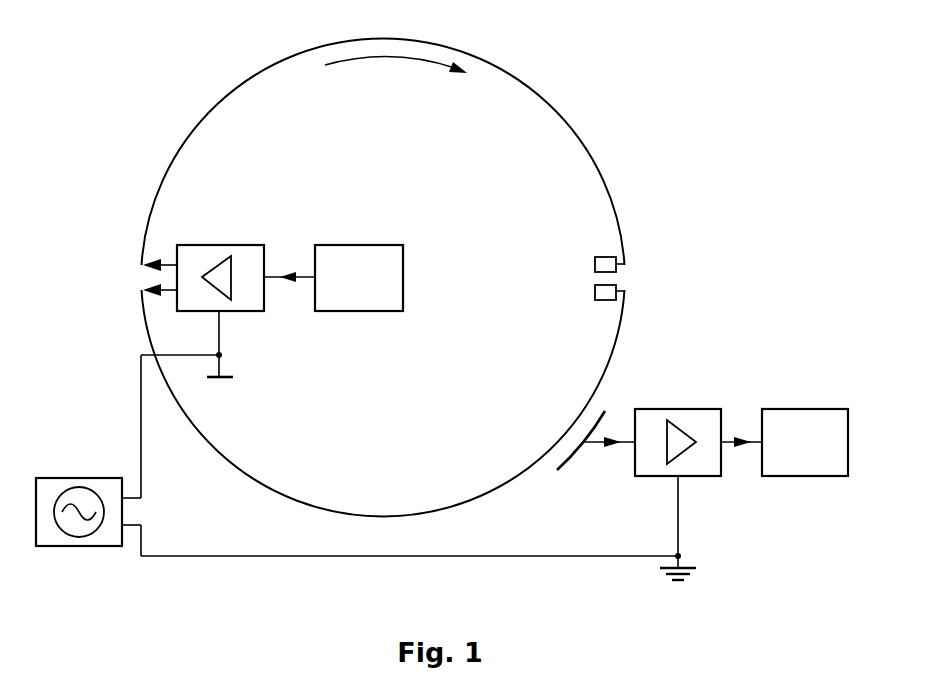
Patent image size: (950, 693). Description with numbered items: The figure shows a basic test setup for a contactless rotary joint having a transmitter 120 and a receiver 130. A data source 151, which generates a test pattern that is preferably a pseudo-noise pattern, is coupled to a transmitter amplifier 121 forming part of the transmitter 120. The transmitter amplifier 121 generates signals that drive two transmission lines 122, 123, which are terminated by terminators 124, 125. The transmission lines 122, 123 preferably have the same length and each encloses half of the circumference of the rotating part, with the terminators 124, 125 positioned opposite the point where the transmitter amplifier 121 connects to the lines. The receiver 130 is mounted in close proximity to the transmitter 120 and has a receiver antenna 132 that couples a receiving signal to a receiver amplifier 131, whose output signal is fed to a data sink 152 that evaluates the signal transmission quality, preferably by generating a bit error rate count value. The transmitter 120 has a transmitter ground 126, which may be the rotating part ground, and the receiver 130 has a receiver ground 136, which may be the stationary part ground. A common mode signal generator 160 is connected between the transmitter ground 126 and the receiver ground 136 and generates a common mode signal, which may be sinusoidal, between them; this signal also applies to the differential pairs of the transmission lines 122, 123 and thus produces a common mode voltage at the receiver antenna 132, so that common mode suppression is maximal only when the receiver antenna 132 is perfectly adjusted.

The transmitter 120 is at (580, 96).
The transmitter amplifier 121 is at (245, 262).
The transmission line 122 is at (149, 215).
The transmission line 123 is at (152, 342).
The terminator 124 is at (604, 257).
The terminator 125 is at (604, 300).
The transmitter ground 126 is at (222, 355).
The receiver 130 is at (652, 358).
The receiver amplifier 131 is at (703, 427).
The receiver antenna 132 is at (576, 456).
The receiver ground 136 is at (681, 556).
The data source 151 is at (362, 262).
The data sink 152 is at (808, 427).
The common mode signal generator 160 is at (112, 496).